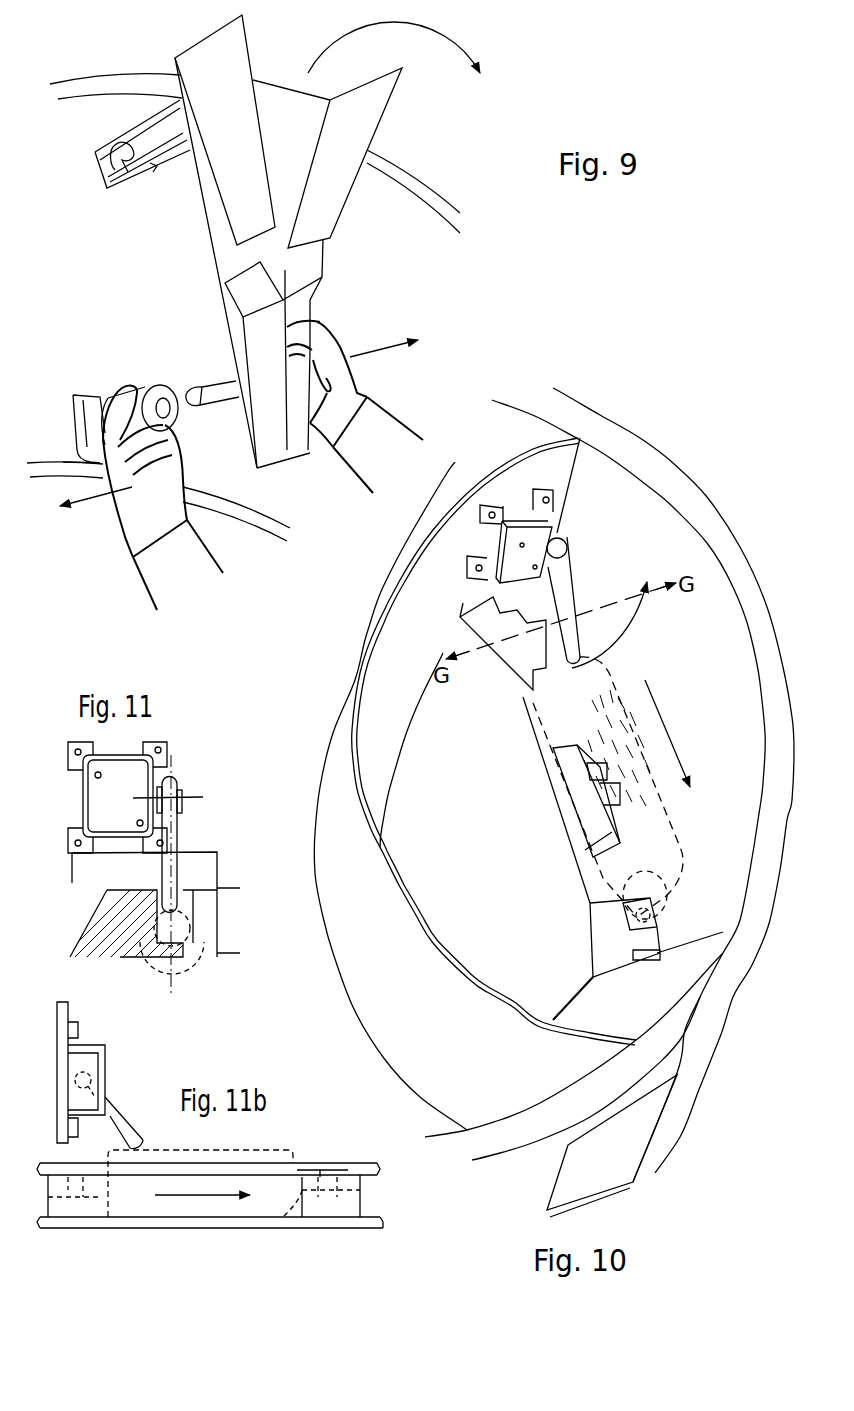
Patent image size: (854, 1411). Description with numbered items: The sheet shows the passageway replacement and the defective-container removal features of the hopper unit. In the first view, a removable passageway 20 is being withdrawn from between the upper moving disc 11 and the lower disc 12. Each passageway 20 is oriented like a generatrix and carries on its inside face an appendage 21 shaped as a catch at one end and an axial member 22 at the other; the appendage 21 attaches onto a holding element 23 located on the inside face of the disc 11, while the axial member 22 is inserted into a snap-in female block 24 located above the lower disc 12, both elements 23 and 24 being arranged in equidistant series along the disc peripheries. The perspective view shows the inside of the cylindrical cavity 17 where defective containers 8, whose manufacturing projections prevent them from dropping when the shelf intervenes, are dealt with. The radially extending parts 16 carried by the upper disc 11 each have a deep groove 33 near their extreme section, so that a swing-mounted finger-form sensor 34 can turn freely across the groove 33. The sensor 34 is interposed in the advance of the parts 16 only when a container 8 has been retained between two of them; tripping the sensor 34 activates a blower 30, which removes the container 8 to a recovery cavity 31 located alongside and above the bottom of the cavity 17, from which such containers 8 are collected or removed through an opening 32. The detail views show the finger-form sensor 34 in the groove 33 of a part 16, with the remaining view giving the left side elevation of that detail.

In FIG. 10, the container 8 is at (602, 670).
In FIG. 11, the container 8 is at (197, 917).
In FIG. 9, the upper moving disc 11 is at (103, 95).
In FIG. 9, the lower disc 12 is at (250, 513).
In FIG. 10, the part 16 is at (495, 637).
In FIG. 10, the cylindrical cavity 17 is at (459, 470).
In FIG. 9, the passageway 20 is at (310, 263).
In FIG. 9, the appendage 21 is at (173, 128).
In FIG. 9, the axial member 22 is at (225, 393).
In FIG. 9, the holding element 23 is at (135, 178).
In FIG. 9, the snap-in female block 24 is at (158, 387).
In FIG. 10, the blower 30 is at (615, 827).
In FIG. 10, the cavity 31 is at (527, 983).
In FIG. 10, the opening 32 is at (613, 1153).
In FIG. 10, the deep groove 33 is at (523, 697).
In FIG. 10, the finger-form sensor 34 is at (563, 593).
In FIG. 11, the finger-form sensor 34 is at (177, 840).